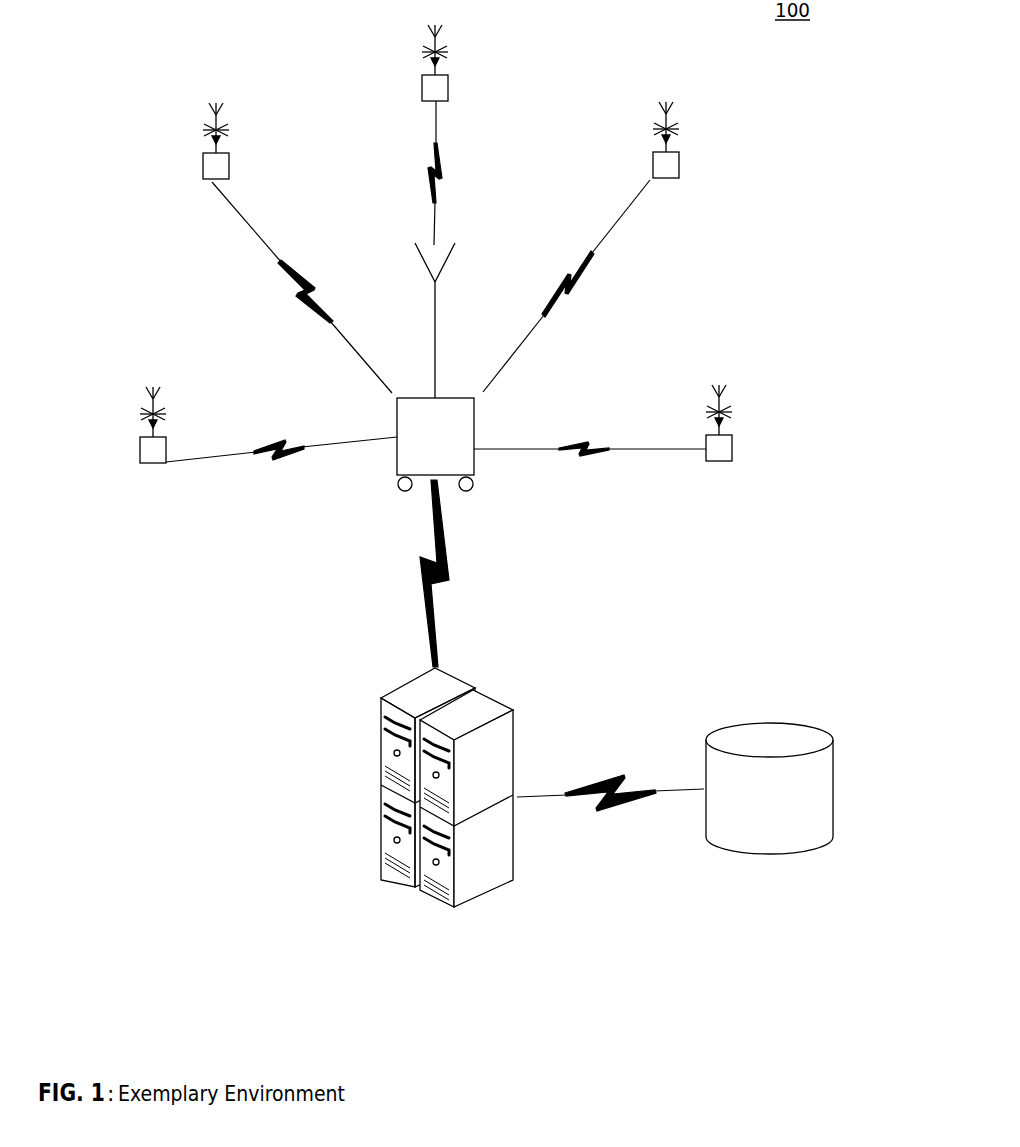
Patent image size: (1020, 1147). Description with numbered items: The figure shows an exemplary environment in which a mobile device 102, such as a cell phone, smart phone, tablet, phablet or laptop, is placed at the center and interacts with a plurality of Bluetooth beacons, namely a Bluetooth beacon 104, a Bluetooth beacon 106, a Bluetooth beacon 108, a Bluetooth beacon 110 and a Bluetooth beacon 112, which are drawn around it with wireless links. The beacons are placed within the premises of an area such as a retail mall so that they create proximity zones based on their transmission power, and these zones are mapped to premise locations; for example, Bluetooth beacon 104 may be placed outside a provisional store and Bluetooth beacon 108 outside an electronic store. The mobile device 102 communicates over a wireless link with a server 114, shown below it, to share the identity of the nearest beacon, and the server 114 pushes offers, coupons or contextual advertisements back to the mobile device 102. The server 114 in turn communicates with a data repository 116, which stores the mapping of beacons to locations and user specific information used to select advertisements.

The mobile device 102 is at (449, 367).
The Bluetooth beacon 104 is at (183, 425).
The Bluetooth beacon 106 is at (245, 141).
The Bluetooth beacon 108 is at (465, 63).
The Bluetooth beacon 110 is at (696, 140).
The Bluetooth beacon 112 is at (748, 423).
The server 114 is at (466, 780).
The data repository 116 is at (796, 772).